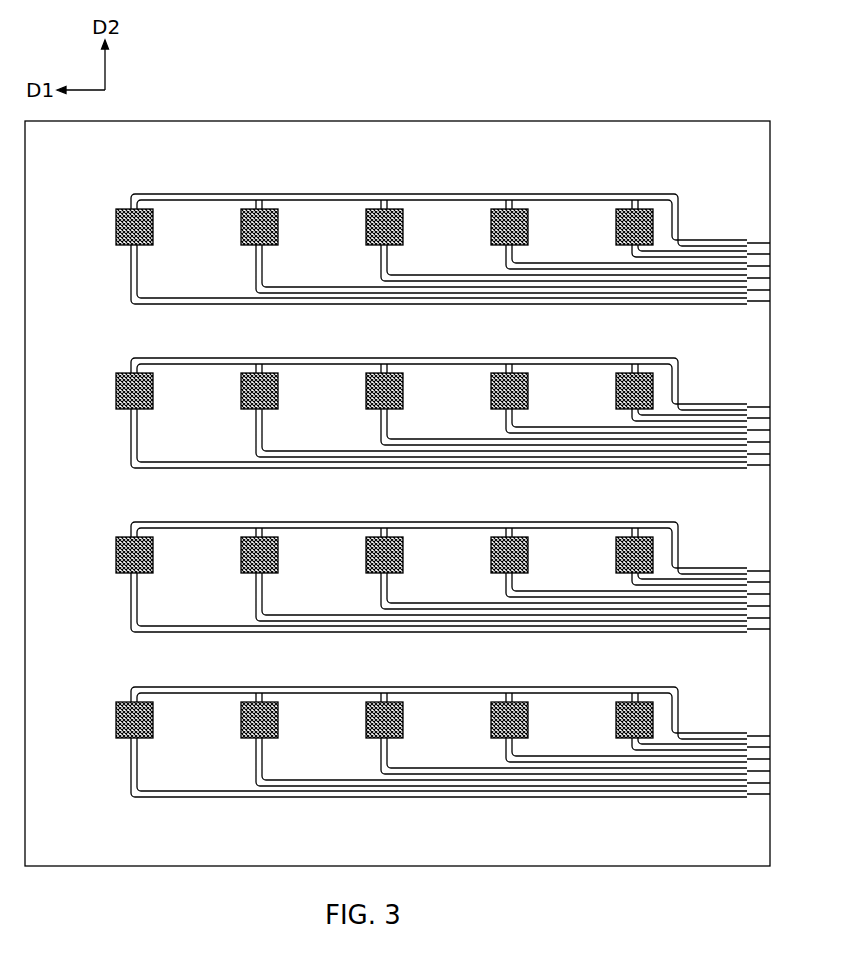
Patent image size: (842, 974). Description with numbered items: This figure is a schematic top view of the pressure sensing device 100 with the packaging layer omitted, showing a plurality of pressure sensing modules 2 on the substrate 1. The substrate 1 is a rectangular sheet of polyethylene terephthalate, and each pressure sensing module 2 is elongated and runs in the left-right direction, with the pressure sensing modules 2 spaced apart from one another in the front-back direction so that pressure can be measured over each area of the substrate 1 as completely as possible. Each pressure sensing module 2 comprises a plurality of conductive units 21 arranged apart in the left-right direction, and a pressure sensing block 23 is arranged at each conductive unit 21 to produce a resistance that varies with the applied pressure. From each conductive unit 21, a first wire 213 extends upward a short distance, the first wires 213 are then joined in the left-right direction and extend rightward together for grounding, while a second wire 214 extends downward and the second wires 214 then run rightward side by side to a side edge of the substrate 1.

The touch device 100 is at (746, 44).
The substrate 1 is at (680, 133).
The pressure sensing module 2 is at (108, 182).
The conductive unit 21 is at (145, 352).
The pressure sensing block 23 is at (122, 576).
The first wire 213 is at (133, 192).
The second wire 214 is at (130, 261).